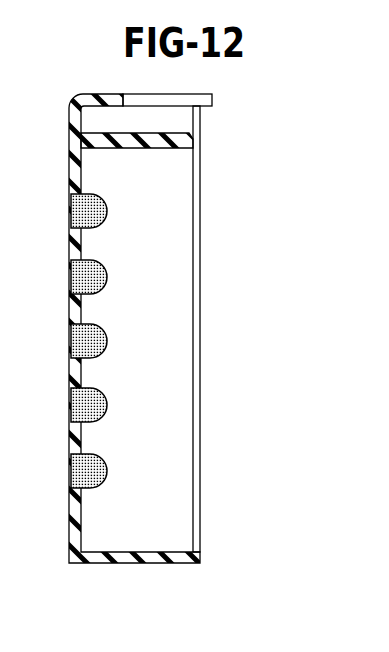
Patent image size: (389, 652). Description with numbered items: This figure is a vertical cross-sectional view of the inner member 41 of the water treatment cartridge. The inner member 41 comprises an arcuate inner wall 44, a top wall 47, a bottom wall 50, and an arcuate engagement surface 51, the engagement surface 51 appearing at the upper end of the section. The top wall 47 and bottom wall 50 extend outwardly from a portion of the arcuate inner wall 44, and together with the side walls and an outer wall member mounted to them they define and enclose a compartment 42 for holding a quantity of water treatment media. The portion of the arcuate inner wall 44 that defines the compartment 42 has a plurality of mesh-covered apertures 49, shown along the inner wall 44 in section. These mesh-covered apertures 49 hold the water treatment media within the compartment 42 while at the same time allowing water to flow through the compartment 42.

The inner member 41 is at (59, 139).
The compartment 42 is at (170, 511).
The arcuate inner wall 44 is at (70, 504).
The top wall 47 is at (193, 139).
The mesh-covered apertures 49 is at (72, 220).
The bottom wall 50 is at (153, 561).
The arcuate engagement surface 51 is at (107, 94).